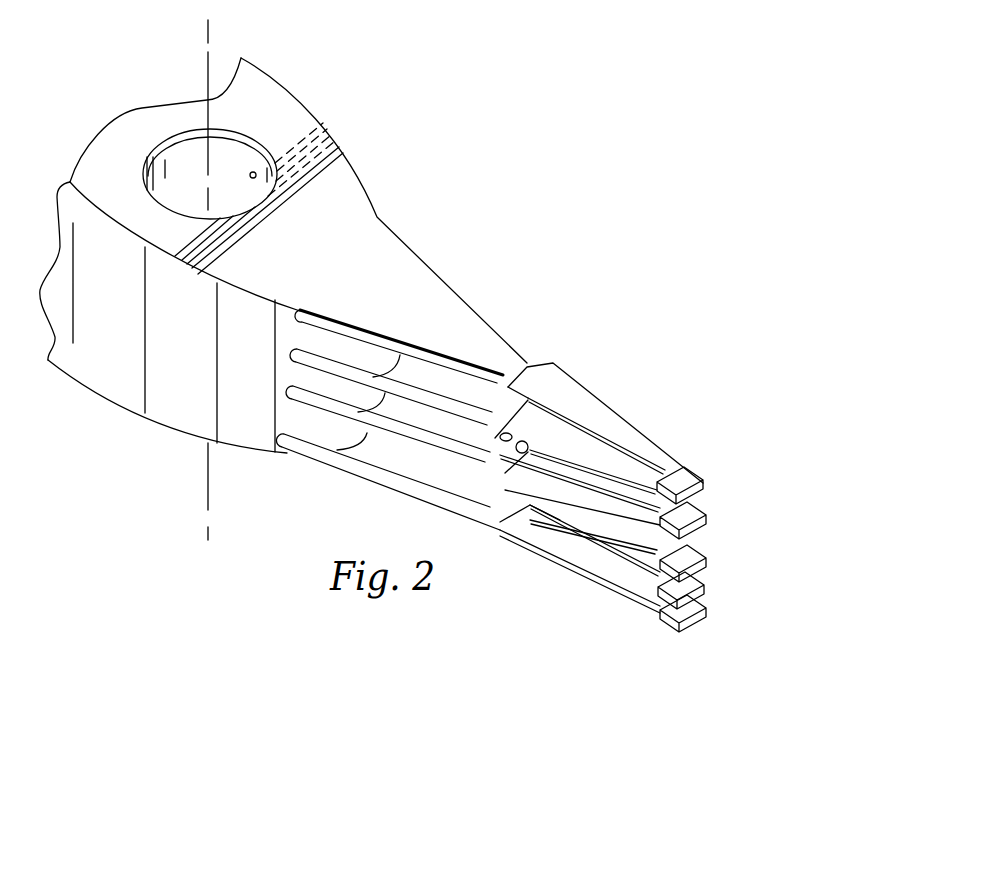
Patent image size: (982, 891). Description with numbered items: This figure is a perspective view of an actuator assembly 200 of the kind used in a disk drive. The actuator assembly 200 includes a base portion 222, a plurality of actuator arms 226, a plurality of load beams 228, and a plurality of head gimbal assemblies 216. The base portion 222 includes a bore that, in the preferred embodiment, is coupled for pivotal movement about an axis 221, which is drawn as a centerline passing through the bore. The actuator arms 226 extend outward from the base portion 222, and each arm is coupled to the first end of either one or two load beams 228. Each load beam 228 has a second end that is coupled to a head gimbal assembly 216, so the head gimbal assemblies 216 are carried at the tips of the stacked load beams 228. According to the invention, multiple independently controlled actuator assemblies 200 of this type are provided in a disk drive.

The actuator assembly 200 is at (473, 243).
The head gimbal assembly 216 is at (708, 498).
The axis 221 is at (207, 474).
The base portion 222 is at (282, 107).
The actuator arms 226 is at (494, 493).
The load beams 228 is at (577, 550).